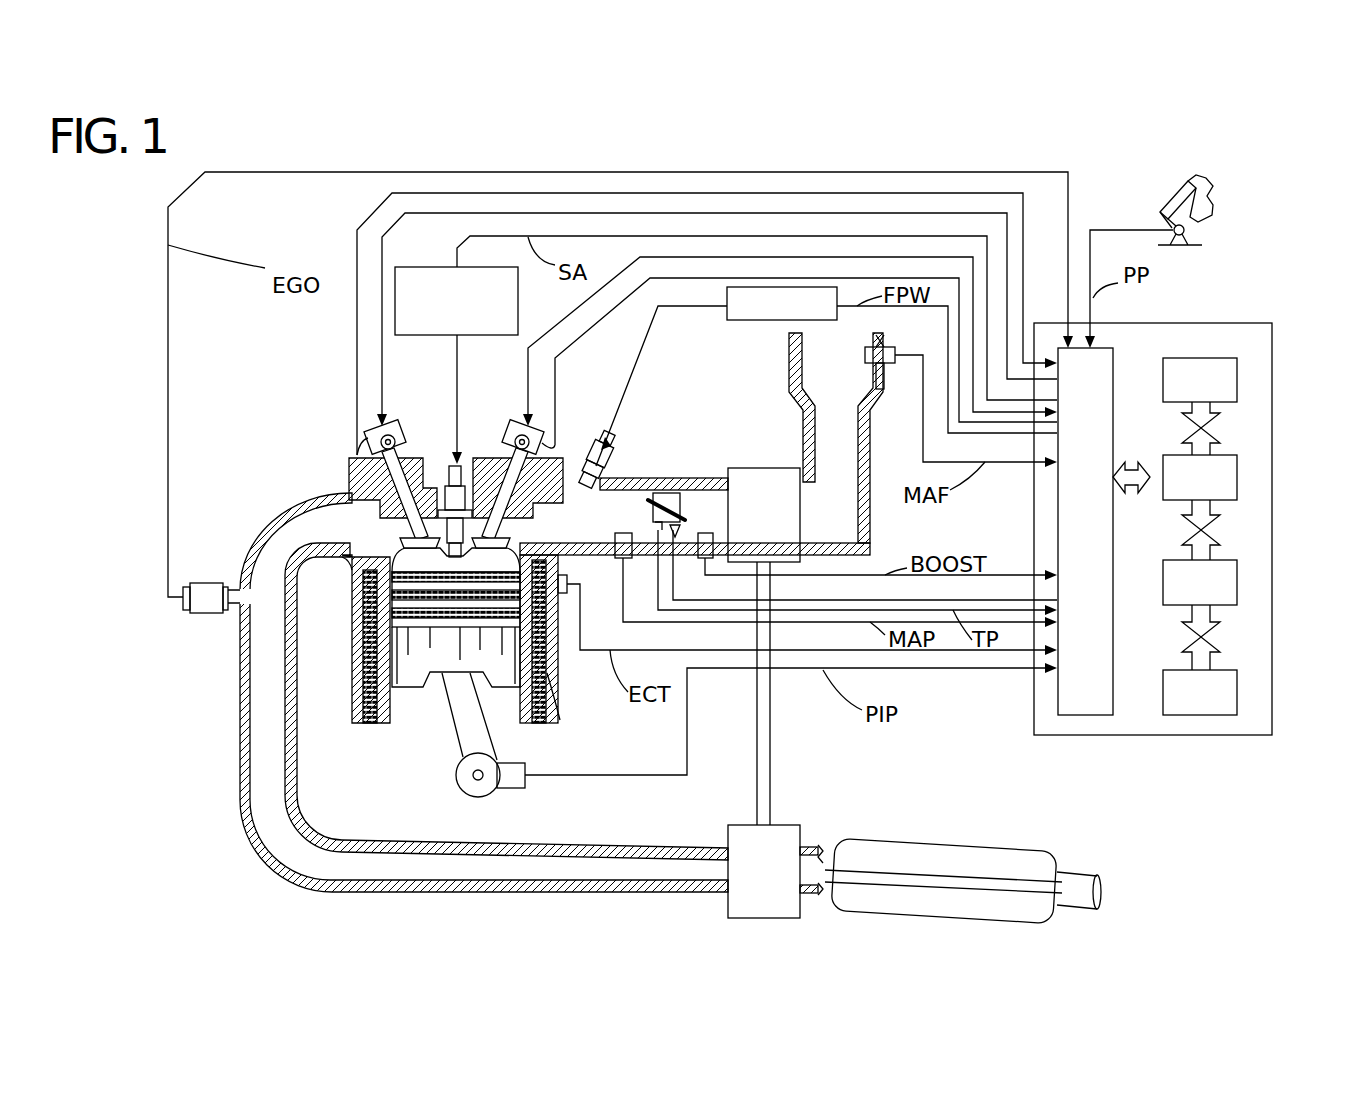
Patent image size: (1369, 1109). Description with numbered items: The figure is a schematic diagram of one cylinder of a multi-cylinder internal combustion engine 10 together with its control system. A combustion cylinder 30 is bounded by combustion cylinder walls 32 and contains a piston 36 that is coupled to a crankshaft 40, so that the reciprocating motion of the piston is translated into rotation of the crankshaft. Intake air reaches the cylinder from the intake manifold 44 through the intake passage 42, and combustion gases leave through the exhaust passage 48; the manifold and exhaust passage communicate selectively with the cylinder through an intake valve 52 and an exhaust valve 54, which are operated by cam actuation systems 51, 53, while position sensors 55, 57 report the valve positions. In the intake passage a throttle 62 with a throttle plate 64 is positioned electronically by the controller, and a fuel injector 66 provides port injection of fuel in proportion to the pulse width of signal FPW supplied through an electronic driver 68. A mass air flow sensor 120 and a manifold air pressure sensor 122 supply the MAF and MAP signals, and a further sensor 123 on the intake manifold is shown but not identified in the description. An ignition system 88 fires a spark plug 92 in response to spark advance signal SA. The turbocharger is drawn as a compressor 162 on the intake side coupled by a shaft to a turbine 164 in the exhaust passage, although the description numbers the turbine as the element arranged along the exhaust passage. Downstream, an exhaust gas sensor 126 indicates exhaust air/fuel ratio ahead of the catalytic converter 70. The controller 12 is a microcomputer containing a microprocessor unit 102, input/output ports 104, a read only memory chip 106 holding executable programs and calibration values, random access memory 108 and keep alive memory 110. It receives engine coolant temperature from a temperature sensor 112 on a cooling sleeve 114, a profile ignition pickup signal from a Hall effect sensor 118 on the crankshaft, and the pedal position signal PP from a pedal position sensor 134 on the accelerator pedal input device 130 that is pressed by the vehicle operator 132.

The internal combustion engine 10 is at (278, 410).
The controller 12 is at (1262, 323).
The combustion cylinder 30 is at (378, 657).
The combustion cylinder walls 32 is at (397, 713).
The piston 36 is at (453, 717).
The crankshaft 40 is at (468, 797).
The intake passage 42 is at (836, 438).
The intake manifold 44 is at (664, 501).
The exhaust passage 48 is at (484, 692).
The cam actuation system 51 is at (513, 422).
The intake valve 52 is at (497, 533).
The cam actuation system 53 is at (397, 425).
The exhaust valve 54 is at (390, 520).
The position sensor 55 is at (542, 442).
The position sensor 57 is at (370, 443).
The throttle 62 is at (667, 493).
The throttle plate 64 is at (690, 492).
The fuel injector 66 is at (590, 460).
The electronic driver 68 is at (742, 320).
The catalytic converter 70 is at (1012, 850).
The ignition system 88 is at (407, 267).
The spark plug 92 is at (462, 455).
The microprocessor unit 102 is at (1238, 472).
The input/output ports 104 is at (1113, 358).
The read only memory chip 106 is at (1237, 377).
The random access memory 108 is at (1238, 580).
The keep alive memory 110 is at (1238, 690).
The temperature sensor 112 is at (567, 588).
The cooling sleeve 114 is at (547, 673).
The Hall effect sensor 118 is at (513, 788).
The mass air flow sensor 120 is at (887, 363).
The manifold air pressure sensor 122 is at (615, 557).
The boost pressure sensor 123 is at (703, 562).
The exhaust gas sensor 126 is at (183, 588).
The input device 130 is at (1218, 212).
The vehicle operator 132 is at (1207, 192).
The pedal position sensor 134 is at (1193, 232).
The turbine 162 is at (764, 515).
The turbine 164 is at (764, 871).